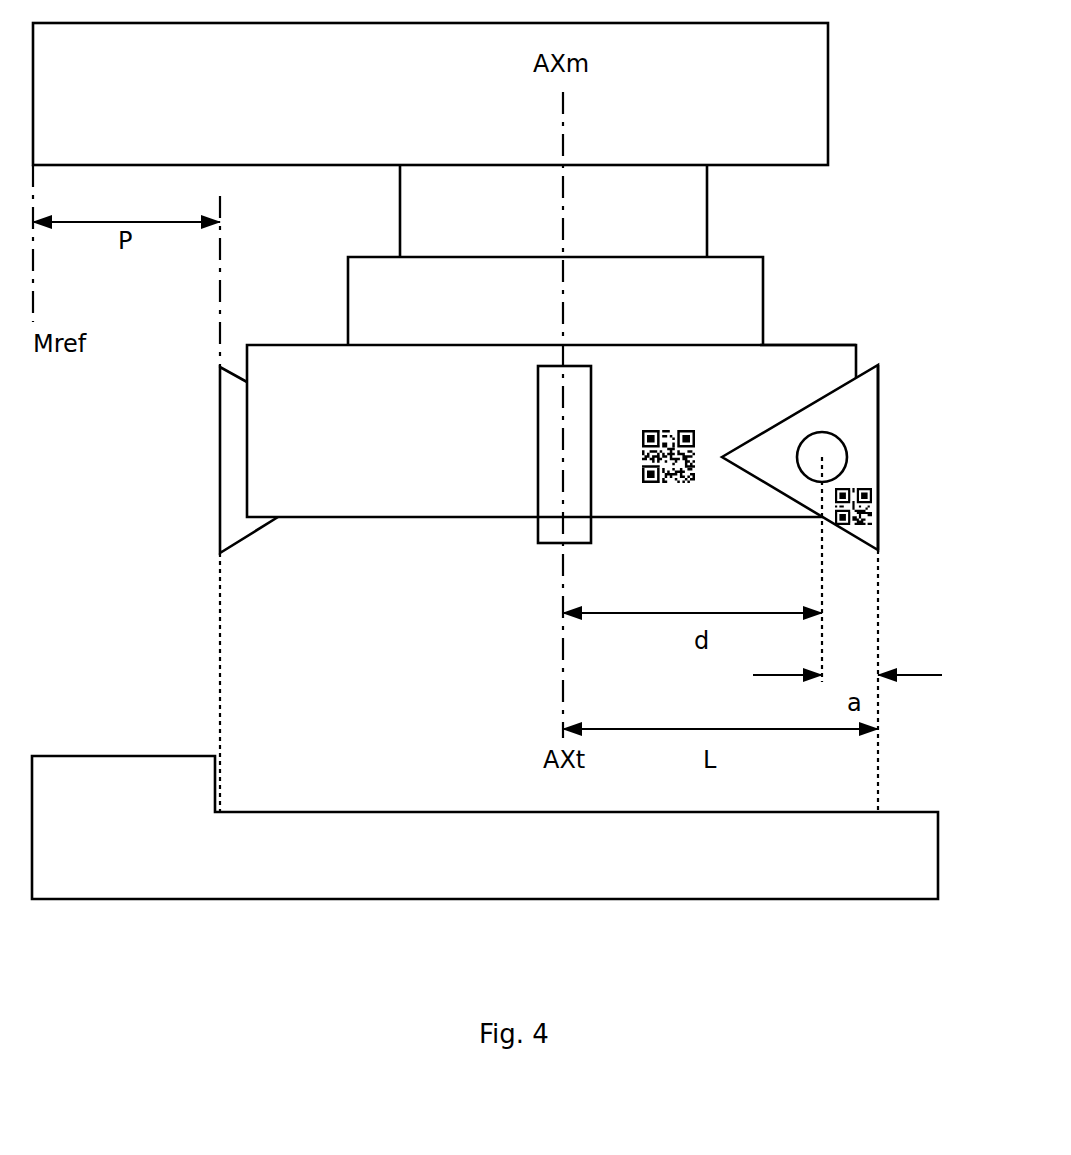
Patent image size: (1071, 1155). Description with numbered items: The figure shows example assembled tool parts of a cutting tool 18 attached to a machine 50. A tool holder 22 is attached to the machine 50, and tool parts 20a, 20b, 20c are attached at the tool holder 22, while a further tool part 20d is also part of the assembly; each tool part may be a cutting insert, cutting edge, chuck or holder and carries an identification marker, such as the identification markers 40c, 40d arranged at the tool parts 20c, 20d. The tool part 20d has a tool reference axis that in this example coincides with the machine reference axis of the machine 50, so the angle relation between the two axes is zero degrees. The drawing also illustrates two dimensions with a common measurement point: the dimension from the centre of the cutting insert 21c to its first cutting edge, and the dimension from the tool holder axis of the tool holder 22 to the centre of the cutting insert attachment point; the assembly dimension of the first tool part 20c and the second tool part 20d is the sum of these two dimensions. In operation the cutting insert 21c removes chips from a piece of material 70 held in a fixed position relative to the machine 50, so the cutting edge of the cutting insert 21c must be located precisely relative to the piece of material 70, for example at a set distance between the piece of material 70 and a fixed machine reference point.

The machine 50 is at (840, 121).
The cutting tool 18 is at (820, 287).
The tool holder 22 is at (384, 522).
The tool part 20a is at (251, 526).
The tool part 20b is at (536, 547).
The tool part 20c is at (851, 402).
The tool part 20d is at (802, 381).
The cutting insert 21c is at (883, 474).
The identification marker 40c is at (877, 521).
The identification marker 40d is at (658, 479).
The piece of material 70 is at (150, 812).